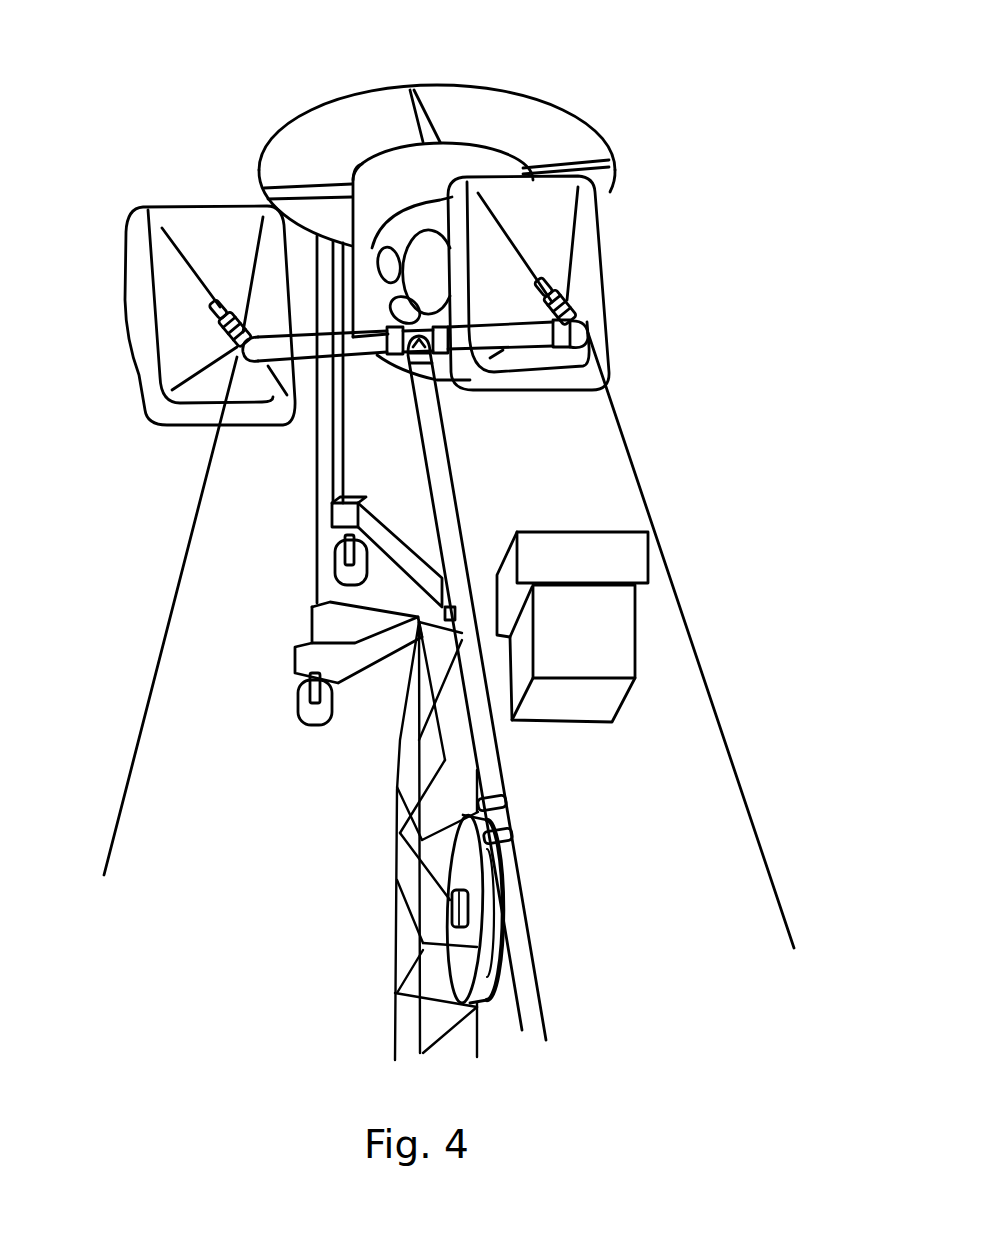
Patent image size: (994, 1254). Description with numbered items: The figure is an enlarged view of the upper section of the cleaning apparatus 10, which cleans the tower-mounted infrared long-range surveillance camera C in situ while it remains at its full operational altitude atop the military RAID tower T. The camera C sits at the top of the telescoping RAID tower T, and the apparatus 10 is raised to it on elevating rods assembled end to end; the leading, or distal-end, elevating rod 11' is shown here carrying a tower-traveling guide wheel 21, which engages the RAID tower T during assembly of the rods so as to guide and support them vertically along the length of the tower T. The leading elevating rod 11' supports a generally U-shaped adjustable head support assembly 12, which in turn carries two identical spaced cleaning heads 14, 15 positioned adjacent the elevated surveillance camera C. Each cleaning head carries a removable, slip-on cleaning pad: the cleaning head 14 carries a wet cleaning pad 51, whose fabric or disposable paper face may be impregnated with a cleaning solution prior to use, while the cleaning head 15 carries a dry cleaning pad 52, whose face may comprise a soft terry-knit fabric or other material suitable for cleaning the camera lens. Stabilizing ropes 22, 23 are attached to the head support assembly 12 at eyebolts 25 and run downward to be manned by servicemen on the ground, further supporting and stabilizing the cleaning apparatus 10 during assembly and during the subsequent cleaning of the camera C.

The apparatus 10 is at (660, 166).
The surveillance camera C is at (343, 140).
The RAID tower T is at (352, 868).
The cleaning head 15 is at (213, 210).
The dry cleaning pad 52 is at (127, 282).
The cleaning head 14 is at (590, 222).
The wet cleaning pad 51 is at (610, 312).
The head support assembly 12 is at (306, 352).
The eyebolt 25 is at (240, 354).
The leading elevating rod 11' is at (477, 688).
The stabilizing rope 22 is at (152, 668).
The stabilizing rope 23 is at (640, 465).
The guide wheel 21 is at (464, 967).